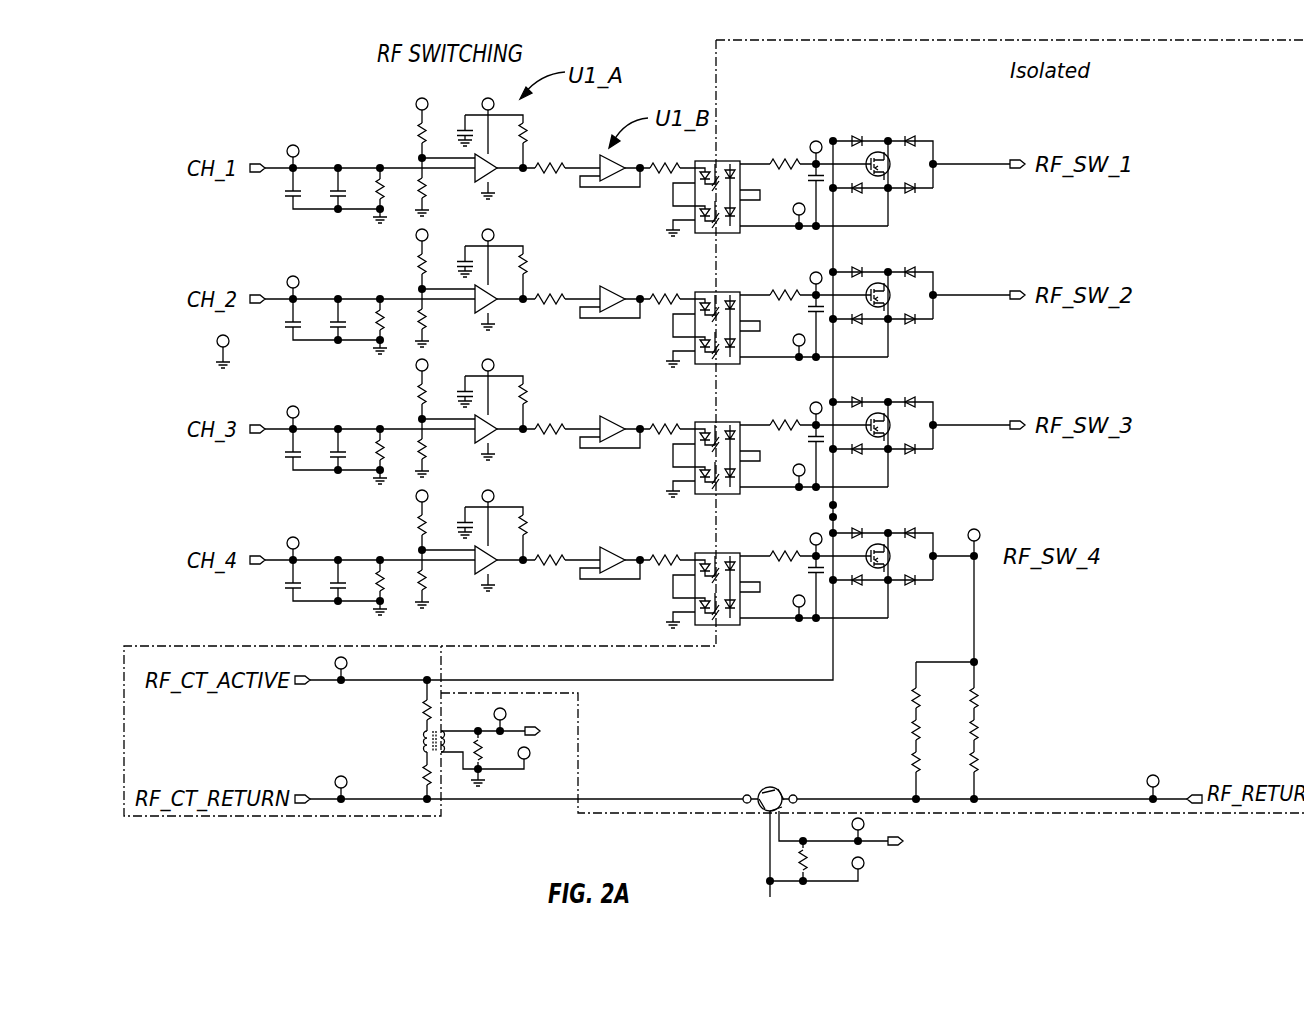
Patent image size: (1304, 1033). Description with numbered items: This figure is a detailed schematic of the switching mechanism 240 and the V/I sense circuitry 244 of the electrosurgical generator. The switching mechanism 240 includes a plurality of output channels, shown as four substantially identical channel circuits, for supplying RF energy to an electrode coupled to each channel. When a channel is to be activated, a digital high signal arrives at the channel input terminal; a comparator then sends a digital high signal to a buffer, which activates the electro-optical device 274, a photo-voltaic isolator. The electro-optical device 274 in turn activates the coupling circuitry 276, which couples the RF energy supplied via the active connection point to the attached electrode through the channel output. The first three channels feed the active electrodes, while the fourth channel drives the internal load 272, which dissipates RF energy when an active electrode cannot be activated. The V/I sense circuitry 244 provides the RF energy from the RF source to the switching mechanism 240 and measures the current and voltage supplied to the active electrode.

The switching mechanism 240 is at (247, 215).
The V/I sense circuitry 244 is at (741, 865).
The internal load 272 is at (990, 709).
The electro-optical device 274 is at (706, 160).
The coupling circuitry 276 is at (933, 137).